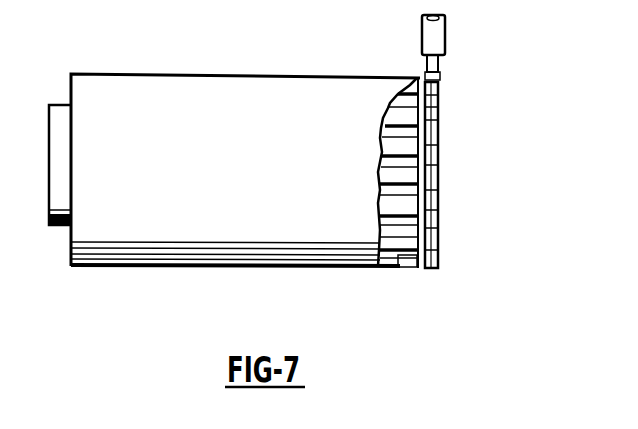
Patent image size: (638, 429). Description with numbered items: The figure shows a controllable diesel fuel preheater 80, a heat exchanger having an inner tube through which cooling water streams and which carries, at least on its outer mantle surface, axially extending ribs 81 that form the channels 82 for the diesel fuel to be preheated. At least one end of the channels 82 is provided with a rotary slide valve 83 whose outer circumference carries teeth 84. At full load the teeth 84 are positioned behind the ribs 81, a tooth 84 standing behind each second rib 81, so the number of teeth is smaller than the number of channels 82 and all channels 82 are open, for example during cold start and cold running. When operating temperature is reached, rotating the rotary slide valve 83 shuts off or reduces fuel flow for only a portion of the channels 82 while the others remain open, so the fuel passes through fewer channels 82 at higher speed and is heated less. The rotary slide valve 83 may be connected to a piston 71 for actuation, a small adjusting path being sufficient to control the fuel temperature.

The piston 71 is at (433, 37).
The diesel fuel preheater 80 is at (414, 276).
The ribs 81 is at (398, 237).
The channels 82 is at (397, 213).
The rotary slide valve 83 is at (437, 248).
The teeth 84 is at (437, 228).